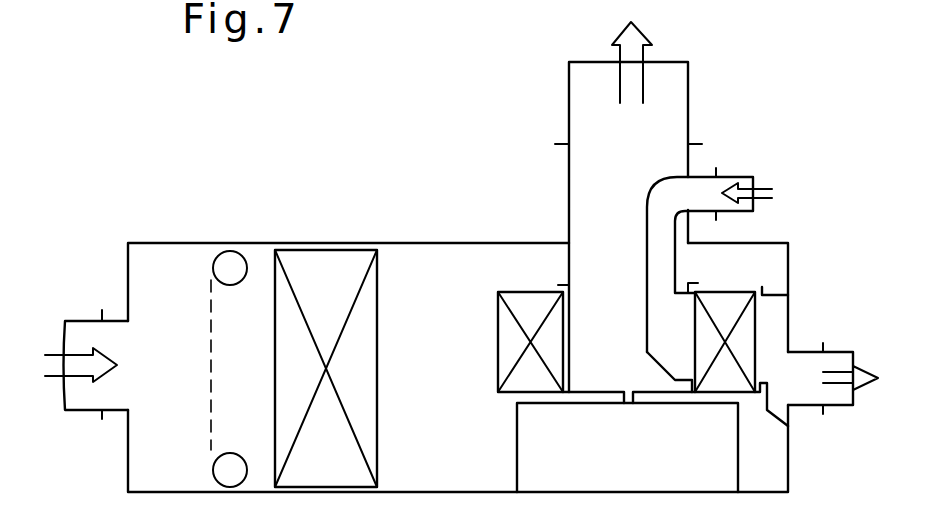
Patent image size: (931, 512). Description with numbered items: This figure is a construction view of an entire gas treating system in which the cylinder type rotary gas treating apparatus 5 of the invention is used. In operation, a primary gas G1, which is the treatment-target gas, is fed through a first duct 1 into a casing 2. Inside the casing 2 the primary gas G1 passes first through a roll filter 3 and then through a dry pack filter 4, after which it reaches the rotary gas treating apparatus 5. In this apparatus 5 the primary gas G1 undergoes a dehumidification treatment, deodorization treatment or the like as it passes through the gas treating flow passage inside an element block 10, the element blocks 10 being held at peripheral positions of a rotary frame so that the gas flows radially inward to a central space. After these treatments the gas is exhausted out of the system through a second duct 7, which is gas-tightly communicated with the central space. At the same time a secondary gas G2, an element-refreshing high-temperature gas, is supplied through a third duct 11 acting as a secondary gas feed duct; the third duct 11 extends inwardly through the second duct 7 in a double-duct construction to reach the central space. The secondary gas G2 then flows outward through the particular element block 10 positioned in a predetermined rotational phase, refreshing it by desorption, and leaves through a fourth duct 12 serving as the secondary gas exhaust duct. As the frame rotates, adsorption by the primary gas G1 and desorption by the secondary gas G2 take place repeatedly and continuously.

The first duct 1 is at (110, 320).
The casing 2 is at (177, 243).
The roll filter 3 is at (211, 422).
The dry pack filter 4 is at (320, 250).
The cylinder type rotary gas treating apparatus 5 is at (511, 266).
The second duct 7 is at (569, 102).
The element block 10 is at (498, 345).
The third duct 11 is at (645, 218).
The fourth duct 12 is at (807, 407).
The primary gas G1 is at (59, 365).
The secondary gas G2 is at (769, 194).